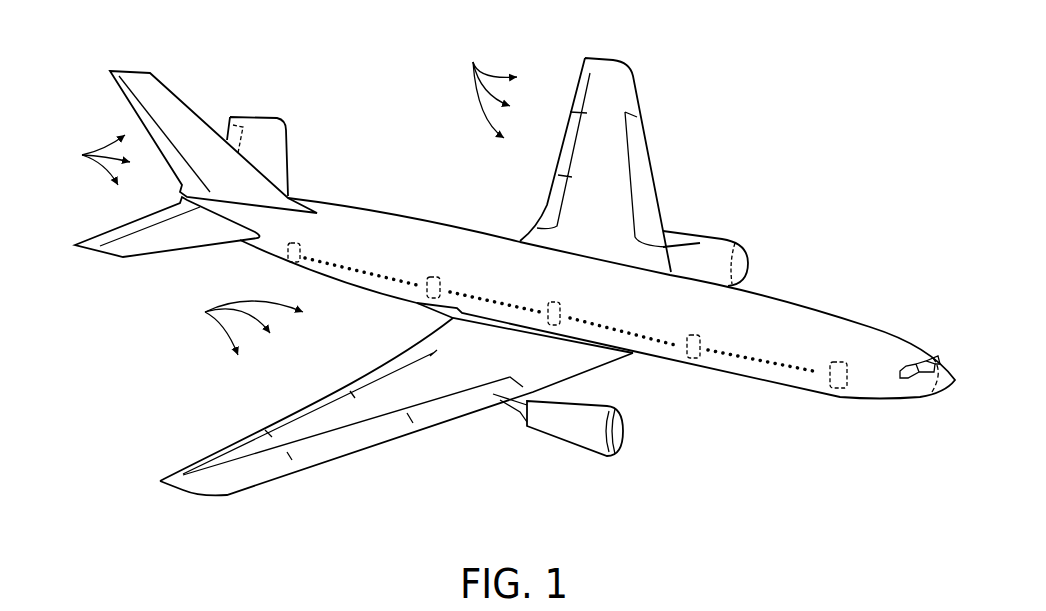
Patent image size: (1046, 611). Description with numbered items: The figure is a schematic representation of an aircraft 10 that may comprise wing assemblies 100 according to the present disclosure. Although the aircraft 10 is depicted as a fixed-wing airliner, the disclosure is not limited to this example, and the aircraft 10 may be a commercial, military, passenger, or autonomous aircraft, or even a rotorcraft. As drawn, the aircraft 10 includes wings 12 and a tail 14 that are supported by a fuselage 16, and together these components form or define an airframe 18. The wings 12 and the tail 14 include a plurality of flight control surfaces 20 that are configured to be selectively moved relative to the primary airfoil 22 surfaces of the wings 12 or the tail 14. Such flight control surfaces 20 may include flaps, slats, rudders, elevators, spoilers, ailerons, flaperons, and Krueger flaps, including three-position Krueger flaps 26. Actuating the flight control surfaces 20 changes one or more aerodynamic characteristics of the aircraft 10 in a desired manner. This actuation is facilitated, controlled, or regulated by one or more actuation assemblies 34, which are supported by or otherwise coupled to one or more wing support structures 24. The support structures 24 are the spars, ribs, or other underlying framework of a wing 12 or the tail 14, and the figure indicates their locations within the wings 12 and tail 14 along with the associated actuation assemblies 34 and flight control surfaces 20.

The aircraft 10 is at (865, 95).
The wings 12 is at (625, 52).
The tail 14 is at (175, 85).
The fuselage 16 is at (400, 213).
The airframe 18 is at (810, 200).
The flight control surfaces 20 is at (282, 196).
The primary airfoil 22 is at (272, 160).
The wing support structures 24 is at (183, 115).
The three-position Krueger flaps 26 is at (683, 262).
The actuation assemblies 34 is at (200, 140).
The wing assemblies 100 is at (597, 55).